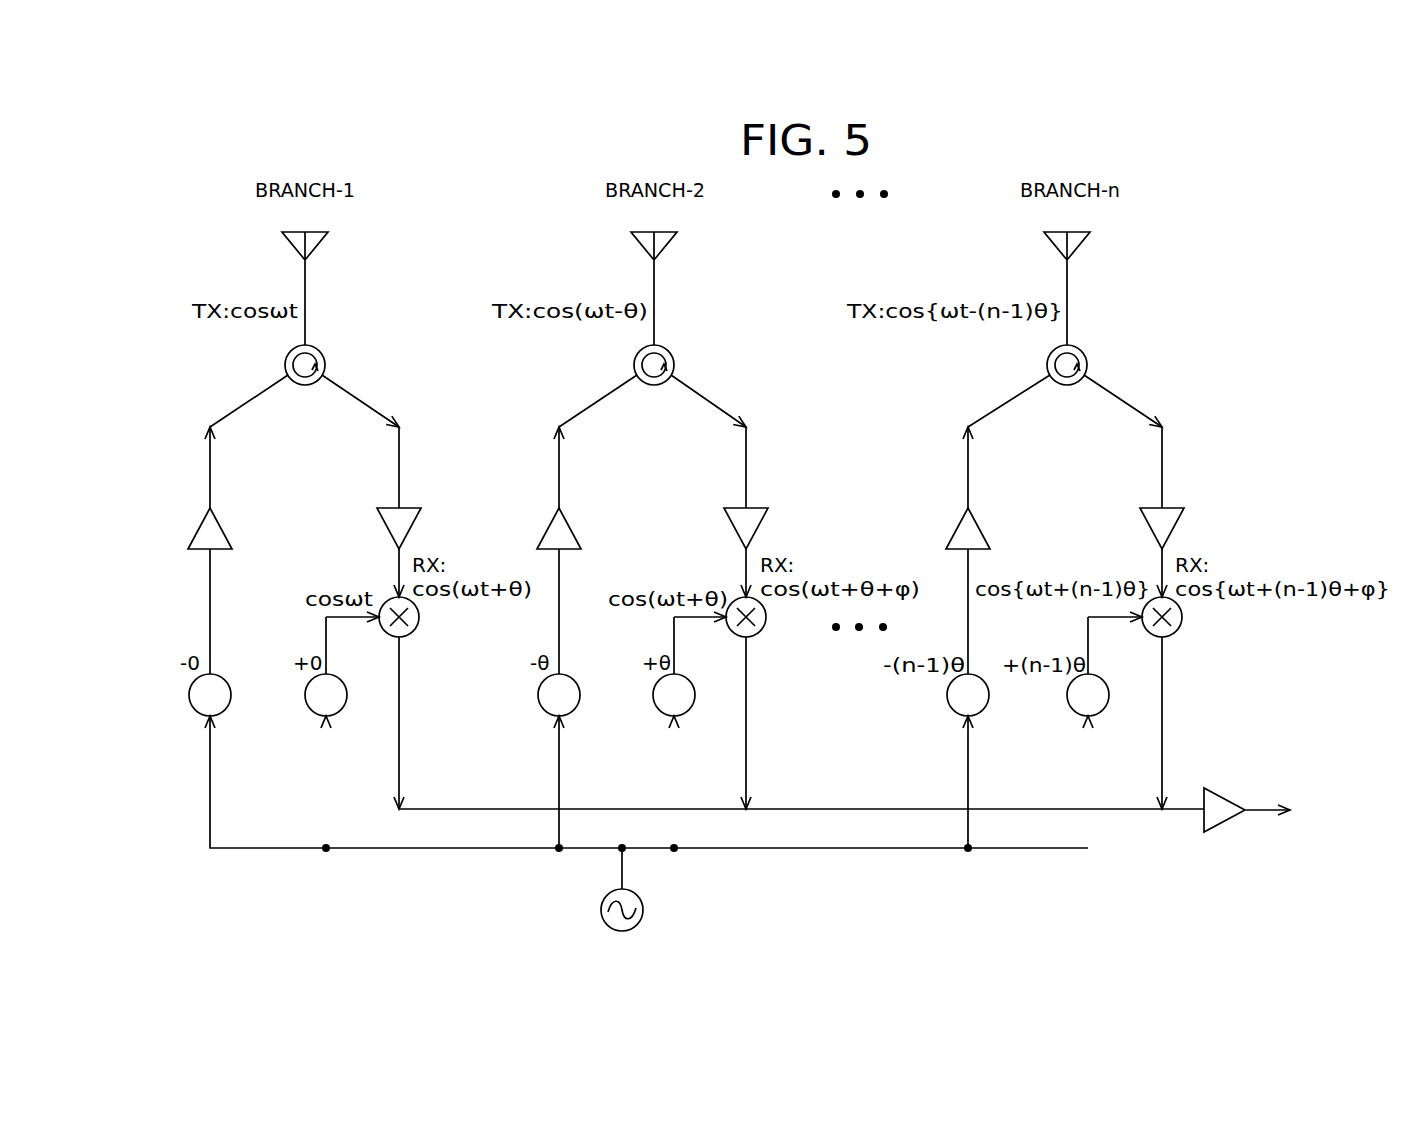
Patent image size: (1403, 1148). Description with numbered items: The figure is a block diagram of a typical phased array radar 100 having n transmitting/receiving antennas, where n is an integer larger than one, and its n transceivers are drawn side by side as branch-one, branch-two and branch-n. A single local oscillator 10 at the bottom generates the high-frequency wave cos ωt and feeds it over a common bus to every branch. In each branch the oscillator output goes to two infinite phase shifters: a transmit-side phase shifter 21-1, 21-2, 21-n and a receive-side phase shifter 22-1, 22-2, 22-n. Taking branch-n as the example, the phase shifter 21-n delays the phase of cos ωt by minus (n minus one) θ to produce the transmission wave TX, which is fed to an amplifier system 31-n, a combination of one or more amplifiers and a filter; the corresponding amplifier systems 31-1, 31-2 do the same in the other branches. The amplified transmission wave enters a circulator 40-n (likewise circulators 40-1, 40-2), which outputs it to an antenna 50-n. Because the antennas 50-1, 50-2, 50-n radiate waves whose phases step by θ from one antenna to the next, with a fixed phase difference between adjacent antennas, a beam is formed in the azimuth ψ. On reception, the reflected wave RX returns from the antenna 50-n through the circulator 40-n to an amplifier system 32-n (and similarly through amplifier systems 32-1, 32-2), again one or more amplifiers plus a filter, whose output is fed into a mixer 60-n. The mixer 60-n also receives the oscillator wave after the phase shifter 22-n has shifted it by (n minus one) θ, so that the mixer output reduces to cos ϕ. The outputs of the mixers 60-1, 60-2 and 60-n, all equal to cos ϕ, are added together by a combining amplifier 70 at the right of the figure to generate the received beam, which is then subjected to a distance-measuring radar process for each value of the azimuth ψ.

The phased array radar 100 is at (1302, 197).
The local oscillator 10 is at (641, 903).
The phase shifter 21-1 is at (222, 710).
The phase shifter 22-1 is at (338, 710).
The amplifier system 31-1 is at (217, 522).
The amplifier system 32-1 is at (408, 508).
The circulator 40-1 is at (322, 353).
The antenna 50-1 is at (316, 243).
The mixer 60-1 is at (411, 633).
The phase shifter 21-2 is at (571, 710).
The phase shifter 22-2 is at (686, 710).
The amplifier system 31-2 is at (566, 522).
The amplifier system 32-2 is at (755, 508).
The circulator 40-2 is at (671, 353).
The antenna 50-2 is at (665, 243).
The mixer 60-2 is at (758, 633).
The phase shifter 21-n is at (980, 710).
The phase shifter 22-n is at (1100, 710).
The amplifier system 31-n is at (975, 522).
The amplifier system 32-n is at (1171, 508).
The circulator 40-n is at (1084, 353).
The antenna 50-n is at (1078, 243).
The mixer 60-n is at (1174, 633).
The combining amplifier 70 is at (1218, 826).